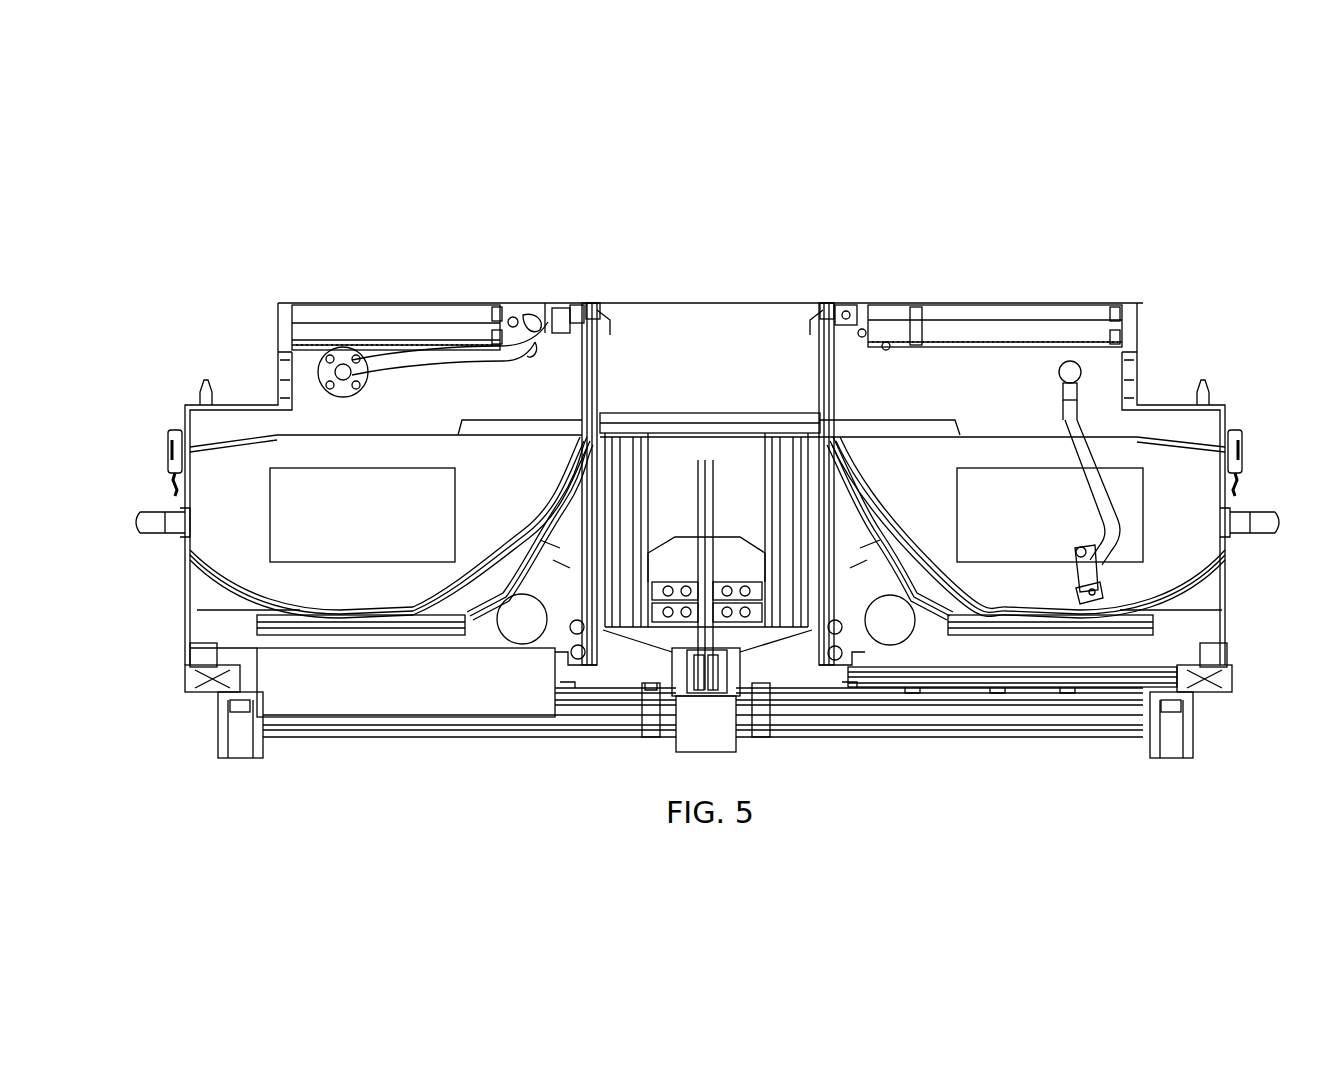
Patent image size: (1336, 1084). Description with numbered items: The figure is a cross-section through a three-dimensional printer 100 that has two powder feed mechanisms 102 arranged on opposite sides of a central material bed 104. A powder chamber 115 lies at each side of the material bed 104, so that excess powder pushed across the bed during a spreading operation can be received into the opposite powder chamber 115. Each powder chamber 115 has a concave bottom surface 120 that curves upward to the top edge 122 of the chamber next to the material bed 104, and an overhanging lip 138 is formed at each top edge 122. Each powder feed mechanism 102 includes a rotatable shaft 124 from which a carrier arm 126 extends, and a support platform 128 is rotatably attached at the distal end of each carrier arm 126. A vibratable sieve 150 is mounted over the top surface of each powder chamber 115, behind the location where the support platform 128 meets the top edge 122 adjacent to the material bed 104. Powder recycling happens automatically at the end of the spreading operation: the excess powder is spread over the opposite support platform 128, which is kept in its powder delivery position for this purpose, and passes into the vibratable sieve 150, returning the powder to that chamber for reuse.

The apparatus 100 is at (405, 755).
The powder feed mechanism 102 is at (240, 365).
The material bed 104 is at (660, 413).
The powder chamber 115 is at (175, 485).
The concave bottom surface 120 is at (215, 580).
The top edge 122 is at (592, 305).
The rotatable shaft 124 is at (346, 380).
The carrier arm 126 is at (447, 358).
The support platform 128 is at (560, 305).
The overhanging lip 138 is at (575, 305).
The vibratable sieve 150 is at (307, 343).